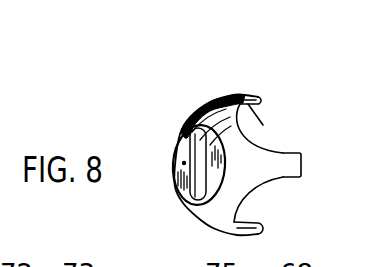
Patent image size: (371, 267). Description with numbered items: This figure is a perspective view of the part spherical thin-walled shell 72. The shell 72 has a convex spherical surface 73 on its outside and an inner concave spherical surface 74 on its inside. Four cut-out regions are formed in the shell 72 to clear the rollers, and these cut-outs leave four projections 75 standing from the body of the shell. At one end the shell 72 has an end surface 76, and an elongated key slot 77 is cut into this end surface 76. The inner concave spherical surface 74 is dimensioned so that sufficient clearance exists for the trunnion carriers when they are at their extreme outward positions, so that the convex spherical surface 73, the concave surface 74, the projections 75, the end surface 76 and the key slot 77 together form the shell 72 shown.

The part spherical thin-walled shell 72 is at (197, 103).
The convex spherical surface 73 is at (224, 98).
The inner concave spherical surface 74 is at (265, 123).
The projection 75 is at (284, 161).
The end surface 76 is at (183, 162).
The elongated key slot 77 is at (199, 143).